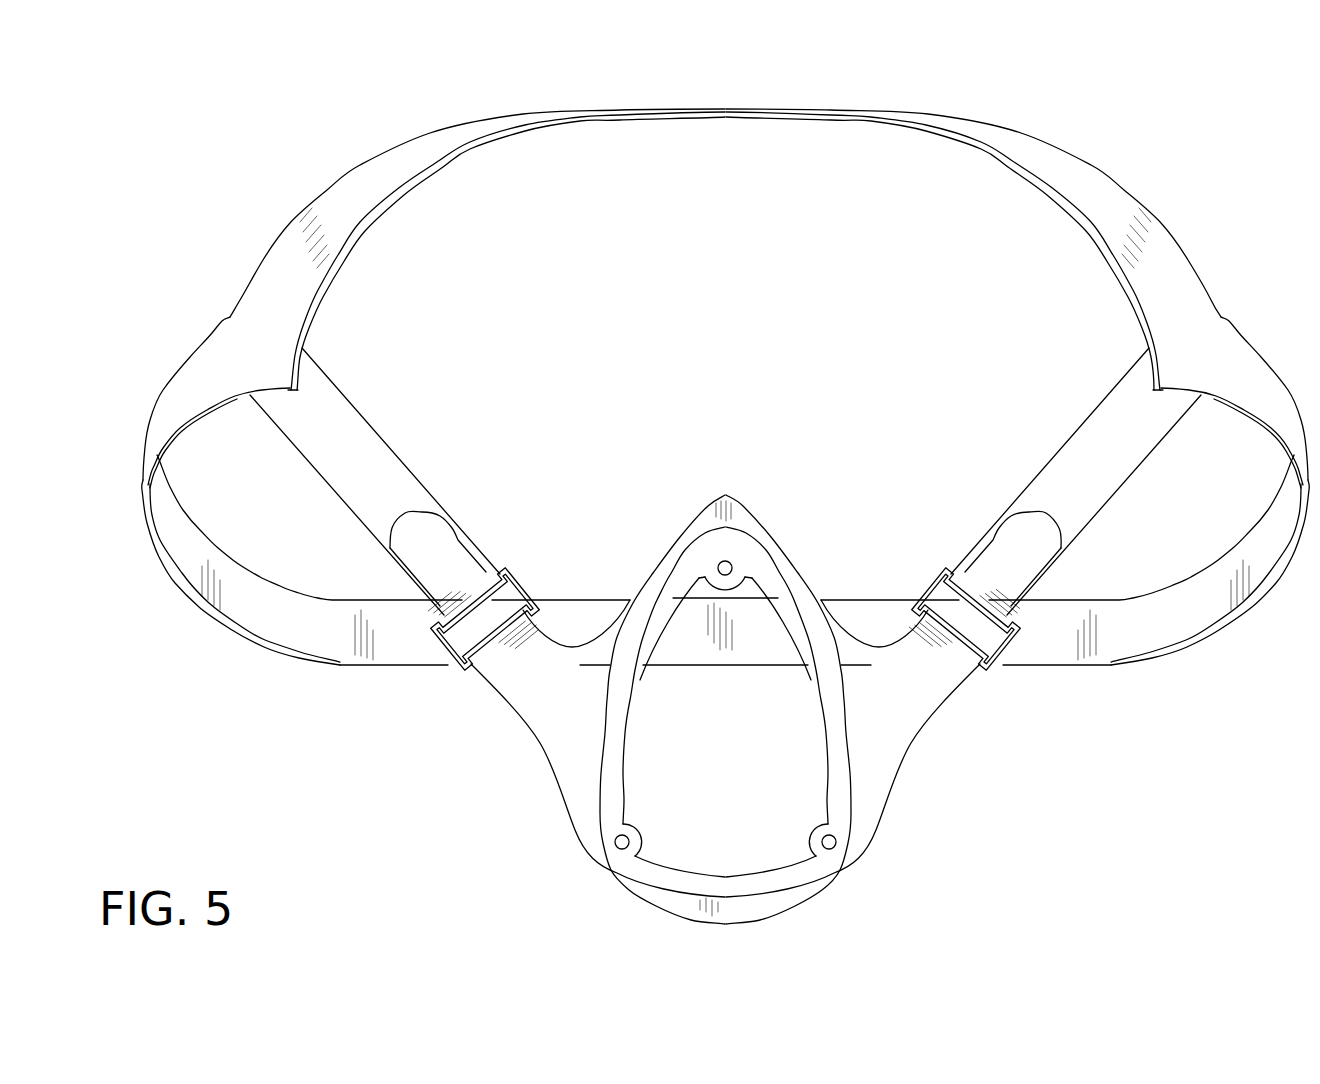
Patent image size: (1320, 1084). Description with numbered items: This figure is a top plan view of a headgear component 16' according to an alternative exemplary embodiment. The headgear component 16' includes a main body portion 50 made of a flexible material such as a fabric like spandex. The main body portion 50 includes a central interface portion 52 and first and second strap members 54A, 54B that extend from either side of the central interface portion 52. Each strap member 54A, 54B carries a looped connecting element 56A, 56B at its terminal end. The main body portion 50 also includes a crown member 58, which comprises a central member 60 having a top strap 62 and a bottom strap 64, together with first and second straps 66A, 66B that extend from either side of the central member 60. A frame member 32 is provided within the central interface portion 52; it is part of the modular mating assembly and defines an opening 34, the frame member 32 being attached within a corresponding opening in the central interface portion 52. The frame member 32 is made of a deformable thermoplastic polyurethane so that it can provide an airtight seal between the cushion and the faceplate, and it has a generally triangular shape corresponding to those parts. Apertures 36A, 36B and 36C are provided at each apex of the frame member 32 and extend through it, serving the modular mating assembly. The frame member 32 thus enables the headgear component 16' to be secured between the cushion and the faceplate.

The headgear component 16' is at (726, 512).
The crown member 58 is at (350, 159).
The central member 60 is at (703, 117).
The top strap 62 is at (1073, 172).
The bottom strap 64 is at (1120, 643).
The first strap 66A is at (363, 438).
The second strap 66B is at (1085, 448).
The looped connecting element 56A is at (450, 650).
The looped connecting element 56B is at (1013, 637).
The first strap member 54A is at (540, 645).
The second strap member 54B is at (933, 672).
The main body portion 50 is at (552, 738).
The central interface portion 52 is at (795, 560).
The frame member 32 is at (808, 635).
The opening 34 is at (742, 770).
The aperture 36A is at (727, 562).
The aperture 36B is at (836, 842).
The aperture 36C is at (615, 842).